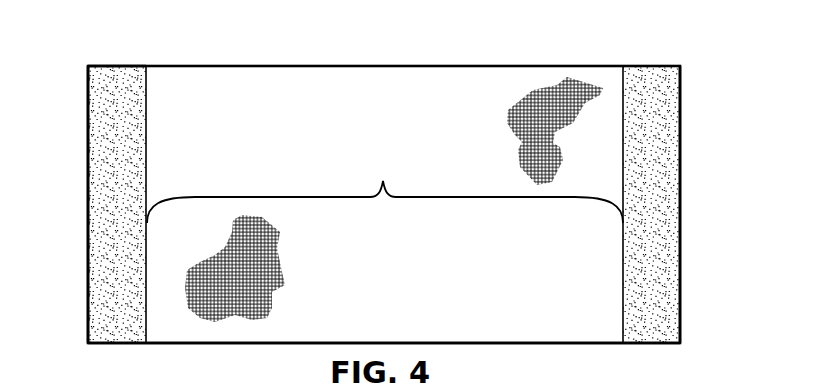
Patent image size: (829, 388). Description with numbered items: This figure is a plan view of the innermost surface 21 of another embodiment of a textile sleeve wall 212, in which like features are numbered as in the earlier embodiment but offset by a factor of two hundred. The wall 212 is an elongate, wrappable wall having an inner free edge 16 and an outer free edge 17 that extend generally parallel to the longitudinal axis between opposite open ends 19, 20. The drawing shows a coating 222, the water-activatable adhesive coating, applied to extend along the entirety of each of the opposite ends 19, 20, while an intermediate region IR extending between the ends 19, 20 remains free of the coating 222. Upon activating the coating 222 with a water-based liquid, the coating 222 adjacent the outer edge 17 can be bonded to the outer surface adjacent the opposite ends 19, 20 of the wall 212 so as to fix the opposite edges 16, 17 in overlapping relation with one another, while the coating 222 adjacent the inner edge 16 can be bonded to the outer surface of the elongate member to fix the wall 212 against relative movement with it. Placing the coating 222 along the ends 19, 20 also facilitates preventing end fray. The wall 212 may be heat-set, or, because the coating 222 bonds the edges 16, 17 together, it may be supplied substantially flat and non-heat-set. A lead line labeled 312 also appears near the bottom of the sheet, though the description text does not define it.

The wall 212 is at (667, 48).
The coating 222 is at (92, 289).
The outer free edge 17 is at (140, 66).
The open end 19 is at (90, 216).
The open end 20 is at (681, 178).
The inner free edge 16 is at (537, 343).
The second cleaning sheet 312 is at (674, 387).
The intermediate region IR is at (385, 192).
The inner surface 21 is at (235, 330).